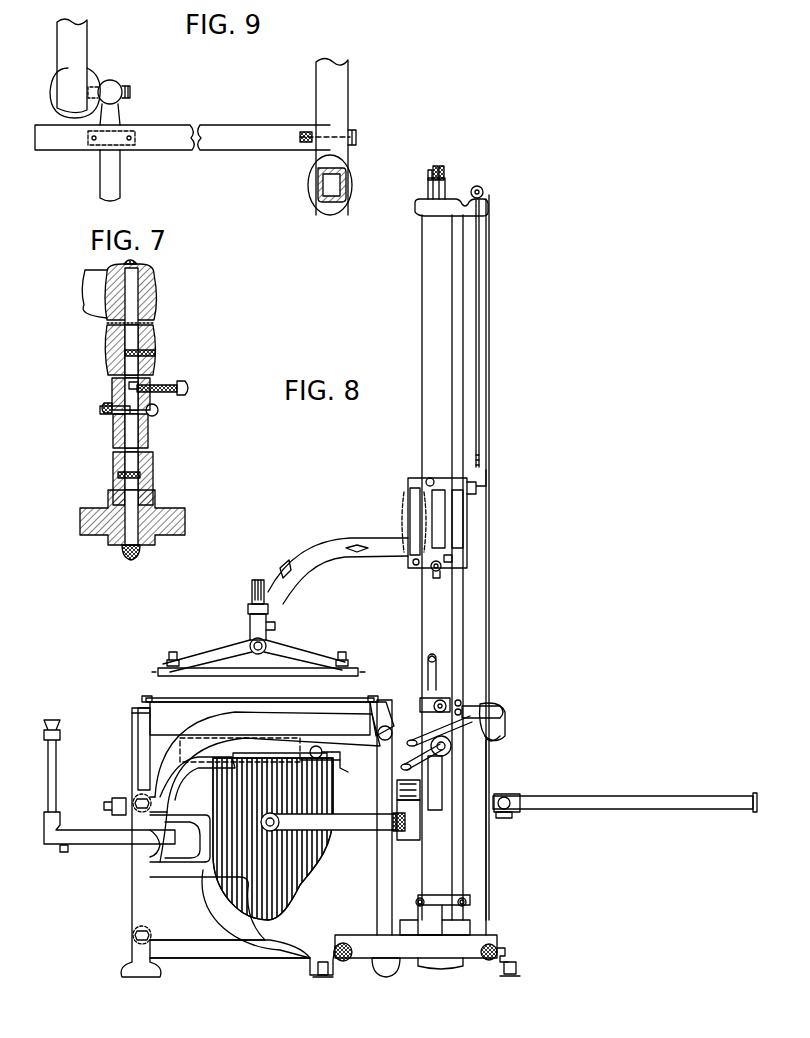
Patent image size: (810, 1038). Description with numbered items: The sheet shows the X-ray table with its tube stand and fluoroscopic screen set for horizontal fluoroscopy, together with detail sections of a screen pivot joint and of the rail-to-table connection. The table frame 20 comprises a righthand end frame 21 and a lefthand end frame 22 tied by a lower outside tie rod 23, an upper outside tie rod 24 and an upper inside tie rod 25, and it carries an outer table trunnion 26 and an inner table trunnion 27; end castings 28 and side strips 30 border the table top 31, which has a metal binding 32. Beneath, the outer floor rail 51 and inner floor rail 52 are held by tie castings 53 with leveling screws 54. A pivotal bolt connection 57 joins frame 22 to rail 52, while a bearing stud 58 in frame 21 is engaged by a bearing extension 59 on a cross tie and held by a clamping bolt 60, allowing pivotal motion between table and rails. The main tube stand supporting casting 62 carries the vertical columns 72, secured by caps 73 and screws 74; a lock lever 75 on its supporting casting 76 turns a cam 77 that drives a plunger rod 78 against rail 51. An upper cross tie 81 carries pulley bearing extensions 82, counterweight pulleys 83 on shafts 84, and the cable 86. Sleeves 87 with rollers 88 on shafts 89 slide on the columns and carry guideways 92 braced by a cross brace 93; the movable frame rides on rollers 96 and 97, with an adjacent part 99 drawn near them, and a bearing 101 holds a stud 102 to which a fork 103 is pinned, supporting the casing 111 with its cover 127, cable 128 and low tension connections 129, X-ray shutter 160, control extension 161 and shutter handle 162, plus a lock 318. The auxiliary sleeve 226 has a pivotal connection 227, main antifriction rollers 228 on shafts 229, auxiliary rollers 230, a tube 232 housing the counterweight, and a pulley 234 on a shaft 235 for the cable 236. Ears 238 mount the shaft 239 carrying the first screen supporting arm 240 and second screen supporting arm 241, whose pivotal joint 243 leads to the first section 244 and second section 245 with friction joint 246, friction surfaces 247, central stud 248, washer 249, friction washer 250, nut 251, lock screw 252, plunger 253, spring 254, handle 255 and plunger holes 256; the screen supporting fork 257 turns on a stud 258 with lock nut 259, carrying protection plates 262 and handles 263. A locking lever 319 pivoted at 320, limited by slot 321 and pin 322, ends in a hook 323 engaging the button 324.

In FIG. 8, the table frame 20 is at (130, 952).
In FIG. 9, the righthand end frame 21 is at (62, 45).
In FIG. 8, the righthand end frame 21 is at (250, 960).
In FIG. 9, the lefthand end frame 22 is at (340, 90).
In FIG. 8, the lefthand end frame 22 is at (380, 878).
In FIG. 8, the lower outside tie rod 23 is at (134, 928).
In FIG. 8, the upper outside tie rod 24 is at (132, 798).
In FIG. 8, the upper inside tie rod 25 is at (387, 725).
In FIG. 8, the outer table trunnion 26 is at (136, 716).
In FIG. 8, the inner table trunnion 27 is at (382, 702).
In FIG. 8, the end castings 28 is at (150, 696).
In FIG. 8, the side strips 30 is at (146, 701).
In FIG. 8, the table top 31 is at (258, 695).
In FIG. 8, the metal binding 32 is at (142, 698).
In FIG. 8, the outer floor rail 51 is at (496, 946).
In FIG. 9, the inner floor rail 52 is at (236, 128).
In FIG. 8, the inner floor rail 52 is at (343, 962).
In FIG. 9, the tie castings 53 is at (116, 175).
In FIG. 8, the tie castings 53 is at (470, 960).
In FIG. 8, the leveling screw 54 is at (518, 967).
In FIG. 9, the pivotal bolt connection 57 is at (345, 130).
In FIG. 9, the bearing stud 58 is at (92, 80).
In FIG. 9, the bearing extension 59 is at (116, 82).
In FIG. 9, the clamping bolt 60 is at (132, 92).
In FIG. 8, the main tube stand supporting casting 62 is at (506, 952).
In FIG. 8, the vertical columns 72 is at (430, 280).
In FIG. 8, the caps 73 is at (436, 970).
In FIG. 8, the screws 74 is at (428, 921).
In FIG. 8, the lock lever 75 is at (412, 740).
In FIG. 8, the supporting casting 76 is at (490, 706).
In FIG. 8, the cam 77 is at (498, 738).
In FIG. 8, the plunger rod 78 is at (490, 856).
In FIG. 8, the upper cross tie 81 is at (416, 212).
In FIG. 8, the pulley bearing extensions 82 is at (426, 188).
In FIG. 8, the counterweight pulleys 83 is at (434, 168).
In FIG. 8, the shaft 84 is at (426, 172).
In FIG. 8, the cable 86 is at (443, 168).
In FIG. 8, the sleeves 87 is at (450, 750).
In FIG. 8, the rollers 88 is at (462, 700).
In FIG. 8, the shafts 89 is at (462, 708).
In FIG. 8, the guideways 92 is at (628, 795).
In FIG. 8, the cross brace 93 is at (757, 793).
In FIG. 8, the rollers 96 is at (397, 787).
In FIG. 8, the rollers 97 is at (505, 818).
In FIG. 8, the clamp 99 is at (512, 812).
In FIG. 8, the bearing 101 is at (410, 838).
In FIG. 8, the stud 102 is at (392, 828).
In FIG. 8, the fork 103 is at (345, 830).
In FIG. 8, the casing 111 is at (305, 885).
In FIG. 8, the cover 127 is at (340, 766).
In FIG. 8, the cable 128 is at (346, 768).
In FIG. 8, the low tension connections 129 is at (324, 750).
In FIG. 8, the X-ray shutter 160 is at (255, 736).
In FIG. 8, the control extension 161 is at (150, 848).
In FIG. 8, the auxiliary shutter handle 162 is at (57, 782).
In FIG. 8, the auxiliary sleeve 226 is at (430, 478).
In FIG. 8, the pivotal connection 227 is at (442, 567).
In FIG. 8, the main antifriction rollers 228 is at (420, 478).
In FIG. 8, the shafts 229 is at (443, 480).
In FIG. 8, the auxiliary rollers 230 is at (482, 497).
In FIG. 8, the tube 232 is at (474, 322).
In FIG. 8, the pulley 234 is at (478, 186).
In FIG. 8, the shaft 235 is at (483, 190).
In FIG. 8, the cable 236 is at (491, 230).
In FIG. 8, the ears 238 is at (414, 476).
In FIG. 8, the shaft 239 is at (412, 515).
In FIG. 8, the first screen supporting arm 240 is at (408, 514).
In FIG. 8, the second screen supporting arm 241 is at (338, 546).
In FIG. 7, the pivotal joint 243 is at (135, 305).
In FIG. 8, the pivotal joint 243 is at (252, 600).
In FIG. 7, the first section 244 is at (152, 340).
In FIG. 8, the first section 244 is at (266, 612).
In FIG. 7, the second section 245 is at (113, 493).
In FIG. 8, the second section 245 is at (250, 628).
In FIG. 7, the friction joint 246 is at (150, 440).
In FIG. 7, the friction surfaces 247 is at (122, 450).
In FIG. 7, the central stud 248 is at (158, 414).
In FIG. 7, the washer 249 is at (113, 425).
In FIG. 7, the friction washer 250 is at (118, 437).
In FIG. 7, the nut 251 is at (106, 412).
In FIG. 7, the lock screw 252 is at (108, 402).
In FIG. 7, the plunger 253 is at (160, 388).
In FIG. 7, the spring 254 is at (140, 380).
In FIG. 7, the handle 255 is at (190, 394).
In FIG. 8, the handle 255 is at (278, 624).
In FIG. 7, the plunger holes 256 is at (122, 386).
In FIG. 7, the screen supporting fork 257 is at (165, 512).
In FIG. 8, the screen supporting fork 257 is at (210, 660).
In FIG. 7, the stud 258 is at (140, 490).
In FIG. 7, the lock nut 259 is at (127, 560).
In FIG. 8, the protection plates 262 is at (350, 660).
In FIG. 8, the handles 263 is at (343, 650).
In FIG. 8, the lock 318 is at (444, 788).
In FIG. 8, the locking lever 319 is at (444, 698).
In FIG. 8, the pivot 320 is at (505, 710).
In FIG. 8, the slot 321 is at (448, 702).
In FIG. 8, the pin 322 is at (472, 722).
In FIG. 8, the hook 323 is at (427, 658).
In FIG. 8, the button 324 is at (455, 559).